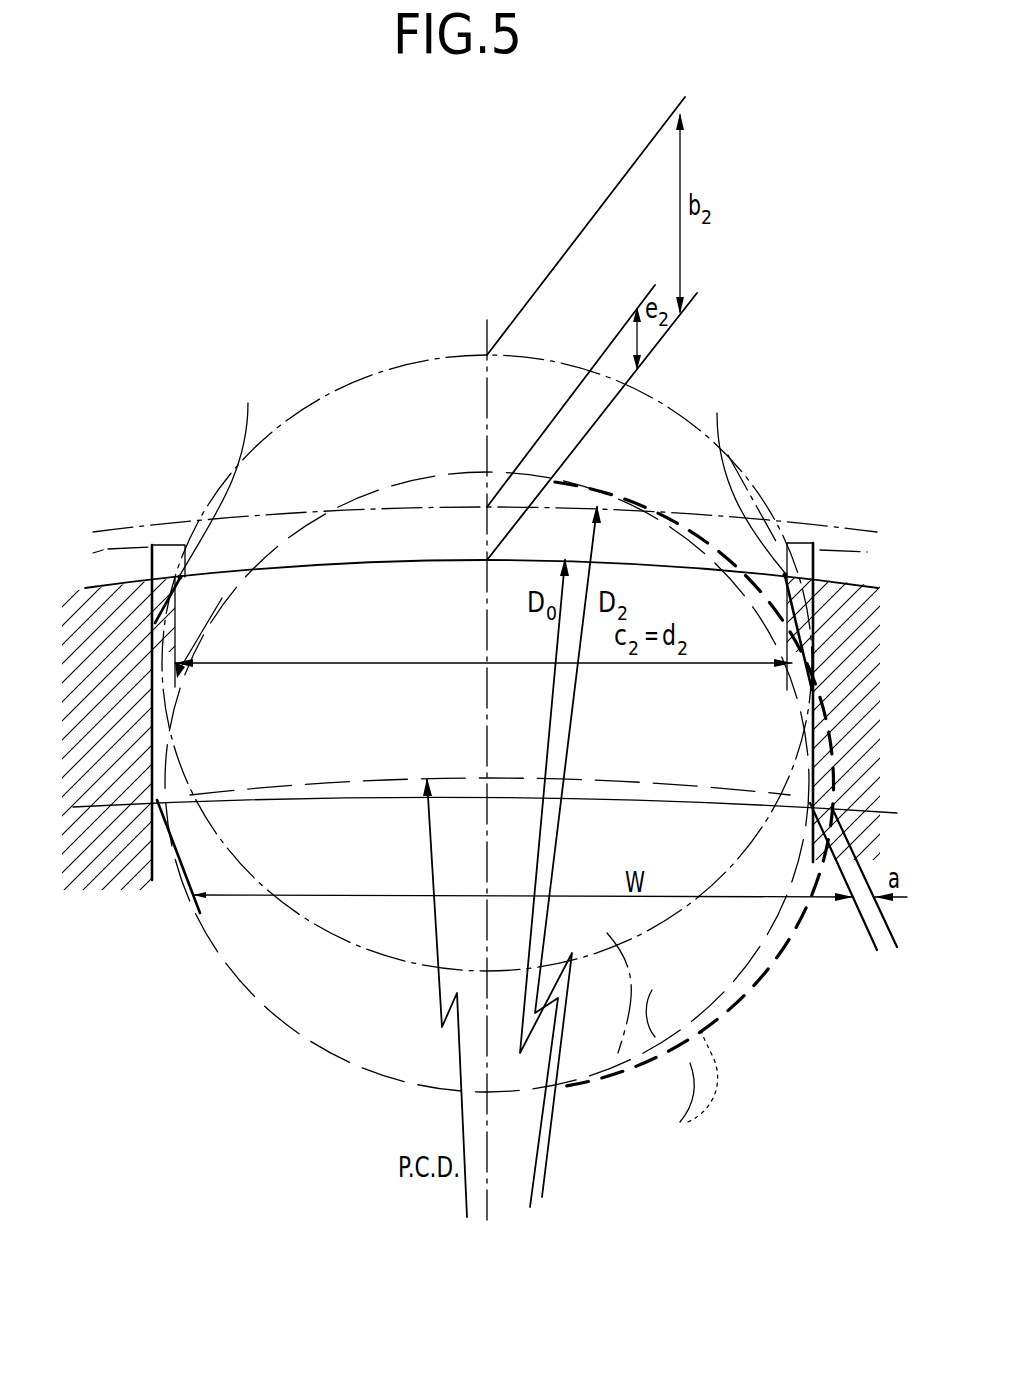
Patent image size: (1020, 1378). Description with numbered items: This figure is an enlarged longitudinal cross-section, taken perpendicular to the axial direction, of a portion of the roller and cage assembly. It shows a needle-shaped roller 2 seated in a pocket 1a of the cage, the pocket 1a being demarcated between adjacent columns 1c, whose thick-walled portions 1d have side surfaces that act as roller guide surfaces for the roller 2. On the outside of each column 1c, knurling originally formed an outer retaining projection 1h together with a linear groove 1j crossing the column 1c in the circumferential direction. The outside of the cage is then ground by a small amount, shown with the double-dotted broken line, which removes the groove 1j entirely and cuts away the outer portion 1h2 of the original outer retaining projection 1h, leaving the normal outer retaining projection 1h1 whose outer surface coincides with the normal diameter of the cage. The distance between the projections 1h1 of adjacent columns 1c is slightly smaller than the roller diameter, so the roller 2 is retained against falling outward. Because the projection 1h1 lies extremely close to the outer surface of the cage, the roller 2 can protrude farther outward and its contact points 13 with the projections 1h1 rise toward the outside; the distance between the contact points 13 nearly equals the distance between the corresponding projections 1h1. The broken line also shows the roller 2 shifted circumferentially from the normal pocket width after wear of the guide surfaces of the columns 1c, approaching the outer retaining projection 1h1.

The pocket 1a is at (353, 868).
The column 1c is at (126, 677).
The thick-walled portion 1d is at (113, 855).
The original outer retaining projection 1h is at (143, 568).
The outer retaining projection 1h1 is at (163, 617).
The outer portion 1h2 is at (185, 543).
The linear groove 1j is at (93, 551).
The contact point 13 is at (483, 530).
The needle-shaped roller 2 is at (627, 1075).